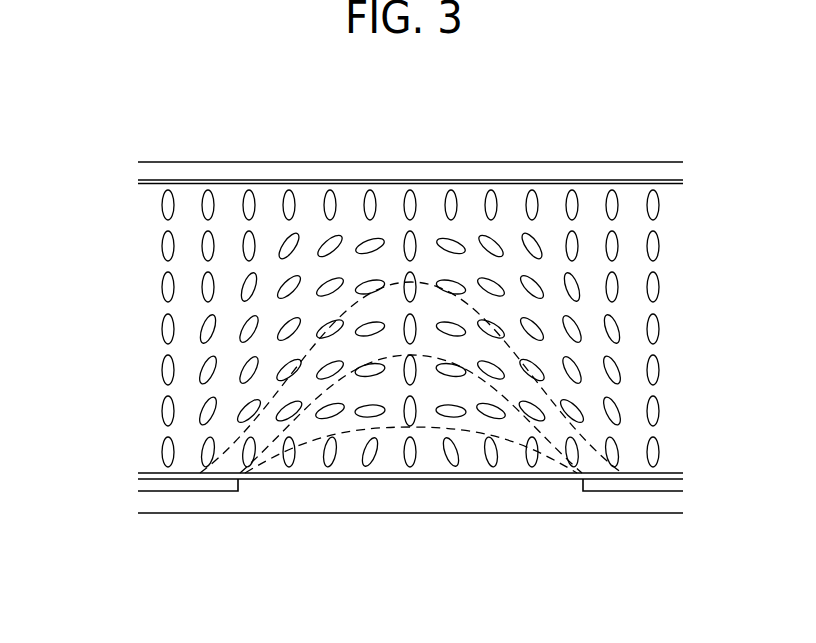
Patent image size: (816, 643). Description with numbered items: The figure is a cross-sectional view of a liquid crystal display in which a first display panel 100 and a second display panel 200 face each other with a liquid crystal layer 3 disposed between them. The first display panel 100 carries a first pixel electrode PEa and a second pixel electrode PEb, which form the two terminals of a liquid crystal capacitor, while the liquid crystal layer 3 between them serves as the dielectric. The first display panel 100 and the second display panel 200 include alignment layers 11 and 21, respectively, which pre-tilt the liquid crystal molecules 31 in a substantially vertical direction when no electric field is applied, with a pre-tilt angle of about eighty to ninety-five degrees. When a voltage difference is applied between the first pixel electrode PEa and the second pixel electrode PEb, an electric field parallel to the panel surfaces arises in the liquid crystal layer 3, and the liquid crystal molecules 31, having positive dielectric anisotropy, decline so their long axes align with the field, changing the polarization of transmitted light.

The second display panel 200 is at (384, 160).
The alignment layer 21 is at (191, 183).
The liquid crystal layer 3 is at (128, 190).
The liquid crystal molecules 31 is at (656, 328).
The alignment layer 11 is at (397, 476).
The first display panel 100 is at (384, 522).
The first pixel electrode PEa is at (190, 491).
The second pixel electrode PEb is at (632, 491).